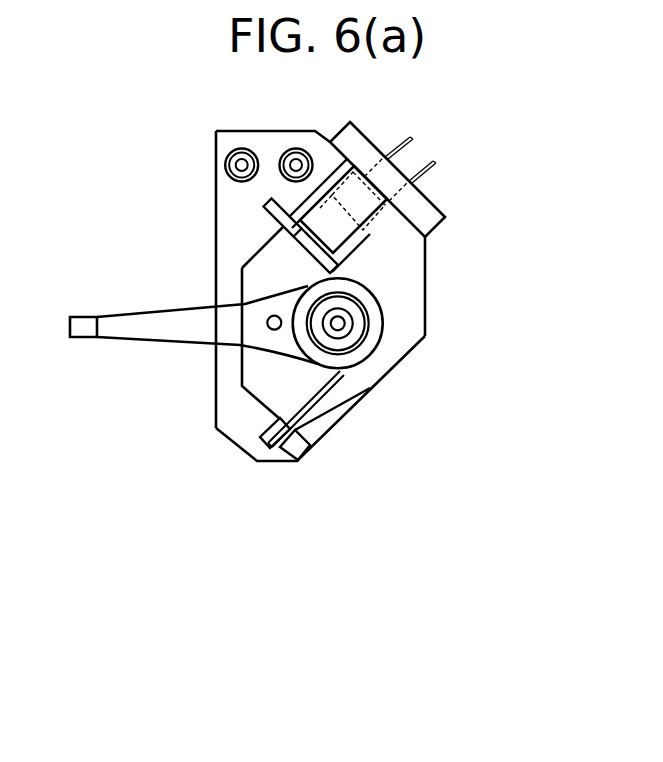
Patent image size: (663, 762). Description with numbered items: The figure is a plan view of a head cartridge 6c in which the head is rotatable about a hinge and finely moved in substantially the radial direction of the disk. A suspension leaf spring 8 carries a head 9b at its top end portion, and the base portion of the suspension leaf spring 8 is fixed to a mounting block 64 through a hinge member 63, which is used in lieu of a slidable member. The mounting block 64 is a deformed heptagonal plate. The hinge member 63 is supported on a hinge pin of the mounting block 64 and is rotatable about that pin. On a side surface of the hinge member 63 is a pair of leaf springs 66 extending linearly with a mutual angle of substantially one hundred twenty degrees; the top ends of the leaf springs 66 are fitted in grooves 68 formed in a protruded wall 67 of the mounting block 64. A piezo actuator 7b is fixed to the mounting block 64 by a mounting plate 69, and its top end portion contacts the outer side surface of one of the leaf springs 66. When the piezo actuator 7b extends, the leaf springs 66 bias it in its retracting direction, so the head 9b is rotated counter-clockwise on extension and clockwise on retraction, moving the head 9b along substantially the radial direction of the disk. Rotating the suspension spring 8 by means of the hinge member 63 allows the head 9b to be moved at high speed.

The head cartridge 6c is at (452, 122).
The piezo actuator 7b is at (372, 254).
The suspension leaf spring 8 is at (145, 334).
The head 9b is at (77, 333).
The hinge member 63 is at (370, 346).
The mounting block 64 is at (425, 304).
The leaf springs 66 is at (302, 249).
The protruded wall 67 is at (242, 428).
The grooves 68 is at (262, 209).
The mounting plate 69 is at (438, 210).